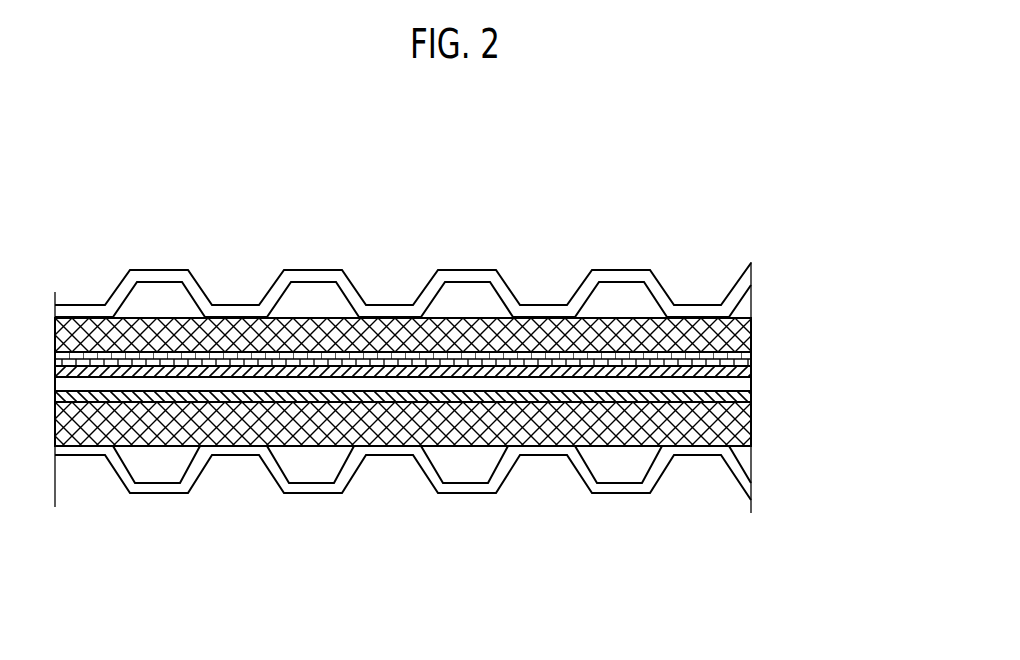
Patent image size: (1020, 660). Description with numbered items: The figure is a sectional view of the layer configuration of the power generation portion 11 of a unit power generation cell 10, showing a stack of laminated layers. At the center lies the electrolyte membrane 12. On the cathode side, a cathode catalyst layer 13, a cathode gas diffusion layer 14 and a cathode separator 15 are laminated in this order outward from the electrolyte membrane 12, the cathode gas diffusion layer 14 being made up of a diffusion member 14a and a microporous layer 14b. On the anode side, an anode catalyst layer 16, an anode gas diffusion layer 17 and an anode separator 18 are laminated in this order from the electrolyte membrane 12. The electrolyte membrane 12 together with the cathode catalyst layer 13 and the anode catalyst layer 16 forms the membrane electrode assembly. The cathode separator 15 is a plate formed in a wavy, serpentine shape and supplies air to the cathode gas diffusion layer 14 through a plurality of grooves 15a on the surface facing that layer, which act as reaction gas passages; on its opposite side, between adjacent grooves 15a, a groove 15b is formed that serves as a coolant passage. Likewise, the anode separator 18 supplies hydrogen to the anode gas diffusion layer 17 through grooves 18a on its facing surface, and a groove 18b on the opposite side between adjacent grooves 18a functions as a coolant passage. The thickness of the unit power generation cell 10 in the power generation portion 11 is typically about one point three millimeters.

The unit power generation cell 10 is at (118, 172).
The power generation portion 11 is at (213, 230).
The electrolyte membrane 12 is at (753, 389).
The cathode catalyst layer 13 is at (753, 373).
The cathode gas diffusion layer 14 is at (853, 293).
The diffusion member 14a is at (753, 335).
The microporous layer 14b is at (753, 361).
The cathode separator 15 is at (753, 290).
The grooves 15a is at (159, 300).
The groove 15b is at (237, 288).
The anode catalyst layer 16 is at (753, 397).
The anode gas diffusion layer 17 is at (753, 425).
The anode separator 18 is at (753, 483).
The grooves 18a is at (159, 465).
The groove 18b is at (239, 480).